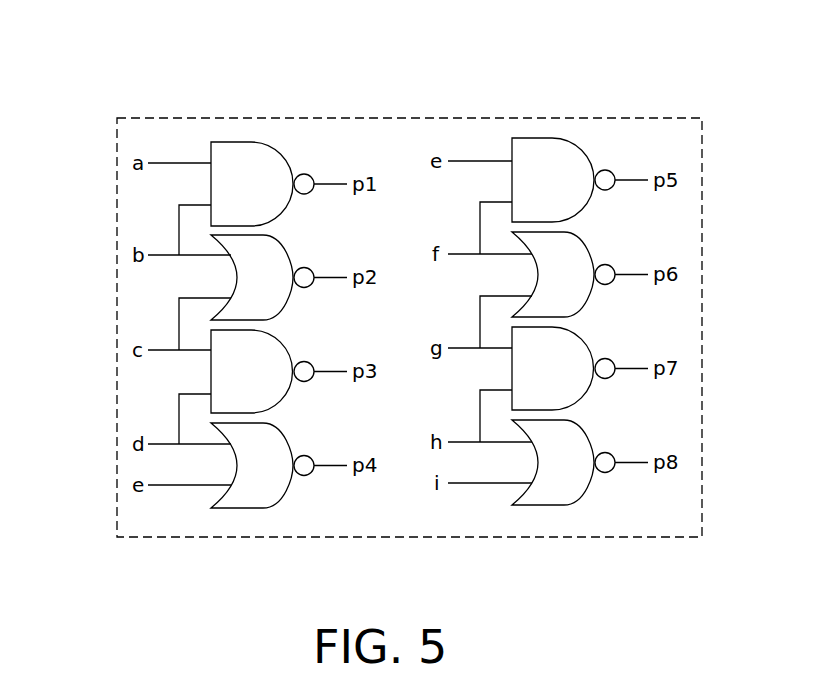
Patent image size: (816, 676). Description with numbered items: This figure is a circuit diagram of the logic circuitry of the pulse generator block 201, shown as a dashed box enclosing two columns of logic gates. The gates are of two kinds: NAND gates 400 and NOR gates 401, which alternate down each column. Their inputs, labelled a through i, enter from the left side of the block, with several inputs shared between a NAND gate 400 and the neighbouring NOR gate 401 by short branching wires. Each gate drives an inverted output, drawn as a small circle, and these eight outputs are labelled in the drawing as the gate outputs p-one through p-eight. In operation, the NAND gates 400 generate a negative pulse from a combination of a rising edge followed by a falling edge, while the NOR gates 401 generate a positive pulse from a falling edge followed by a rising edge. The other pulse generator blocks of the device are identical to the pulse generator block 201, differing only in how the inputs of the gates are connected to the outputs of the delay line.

The pulse generator block 201 is at (138, 135).
The NAND gate 400 is at (235, 170).
The NOR gate 401 is at (248, 280).